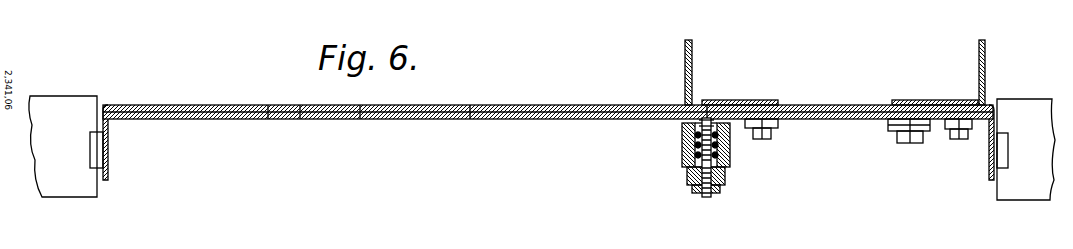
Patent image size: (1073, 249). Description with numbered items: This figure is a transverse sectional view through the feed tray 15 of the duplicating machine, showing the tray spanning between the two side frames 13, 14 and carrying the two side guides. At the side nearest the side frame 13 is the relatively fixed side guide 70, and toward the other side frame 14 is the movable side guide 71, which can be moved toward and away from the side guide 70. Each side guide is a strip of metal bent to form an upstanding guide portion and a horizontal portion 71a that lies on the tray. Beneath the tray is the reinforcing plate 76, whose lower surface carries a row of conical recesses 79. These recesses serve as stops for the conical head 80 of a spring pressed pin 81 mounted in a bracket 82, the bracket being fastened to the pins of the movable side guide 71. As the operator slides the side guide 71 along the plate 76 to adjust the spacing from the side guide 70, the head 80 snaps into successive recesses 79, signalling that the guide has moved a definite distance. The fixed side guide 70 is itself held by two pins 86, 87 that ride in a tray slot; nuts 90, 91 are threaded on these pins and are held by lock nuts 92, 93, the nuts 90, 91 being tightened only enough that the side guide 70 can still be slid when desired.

The side frame 13 is at (1027, 108).
The side frame 14 is at (80, 107).
The feed tray 15 is at (332, 108).
The fixed side guide 70 is at (979, 62).
The movable side guide 71 is at (686, 43).
The horizontal portion 71a is at (740, 100).
The reinforcing plate 76 is at (277, 100).
The conical recesses 79 is at (470, 119).
The conical head 80 is at (731, 138).
The spring pressed pin 81 is at (696, 165).
The bracket 82 is at (729, 161).
The pin 86 is at (910, 141).
The pin 87 is at (962, 140).
The nut 90 is at (892, 125).
The nut 91 is at (948, 129).
The lock nut 92 is at (923, 142).
The lock nut 93 is at (968, 136).